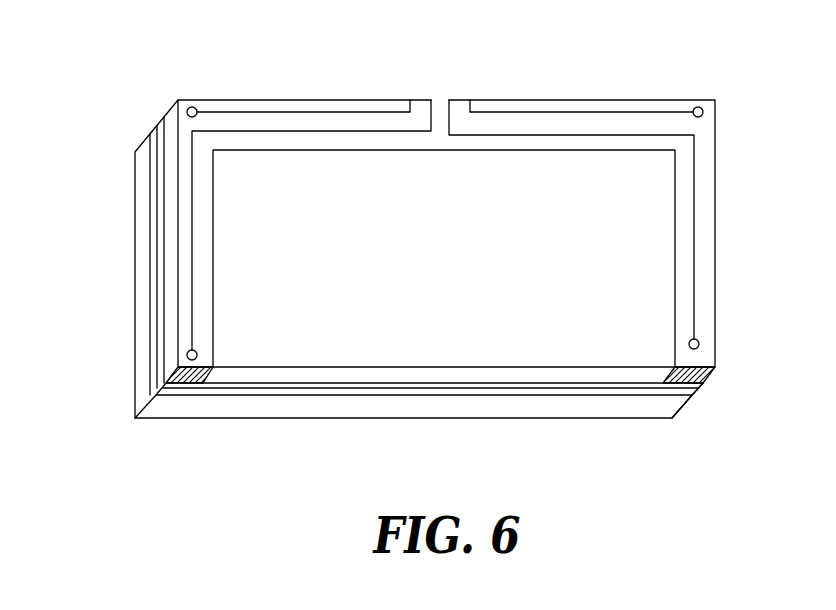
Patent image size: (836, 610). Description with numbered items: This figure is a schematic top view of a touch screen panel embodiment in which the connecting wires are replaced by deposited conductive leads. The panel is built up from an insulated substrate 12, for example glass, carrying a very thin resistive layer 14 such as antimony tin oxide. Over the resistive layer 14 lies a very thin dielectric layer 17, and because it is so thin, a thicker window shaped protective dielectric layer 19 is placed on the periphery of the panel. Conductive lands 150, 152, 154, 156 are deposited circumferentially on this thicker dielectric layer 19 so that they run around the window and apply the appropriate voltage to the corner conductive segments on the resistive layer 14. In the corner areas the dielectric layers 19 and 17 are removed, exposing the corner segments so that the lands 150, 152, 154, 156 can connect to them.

The insulated substrate 12 is at (673, 408).
The resistive layer 14 is at (688, 386).
The dielectric layer 17 is at (167, 382).
The protective dielectric layer 19 is at (708, 376).
The conductive land 150 is at (245, 112).
The conductive land 152 is at (327, 130).
The conductive land 154 is at (528, 134).
The conductive land 156 is at (607, 111).